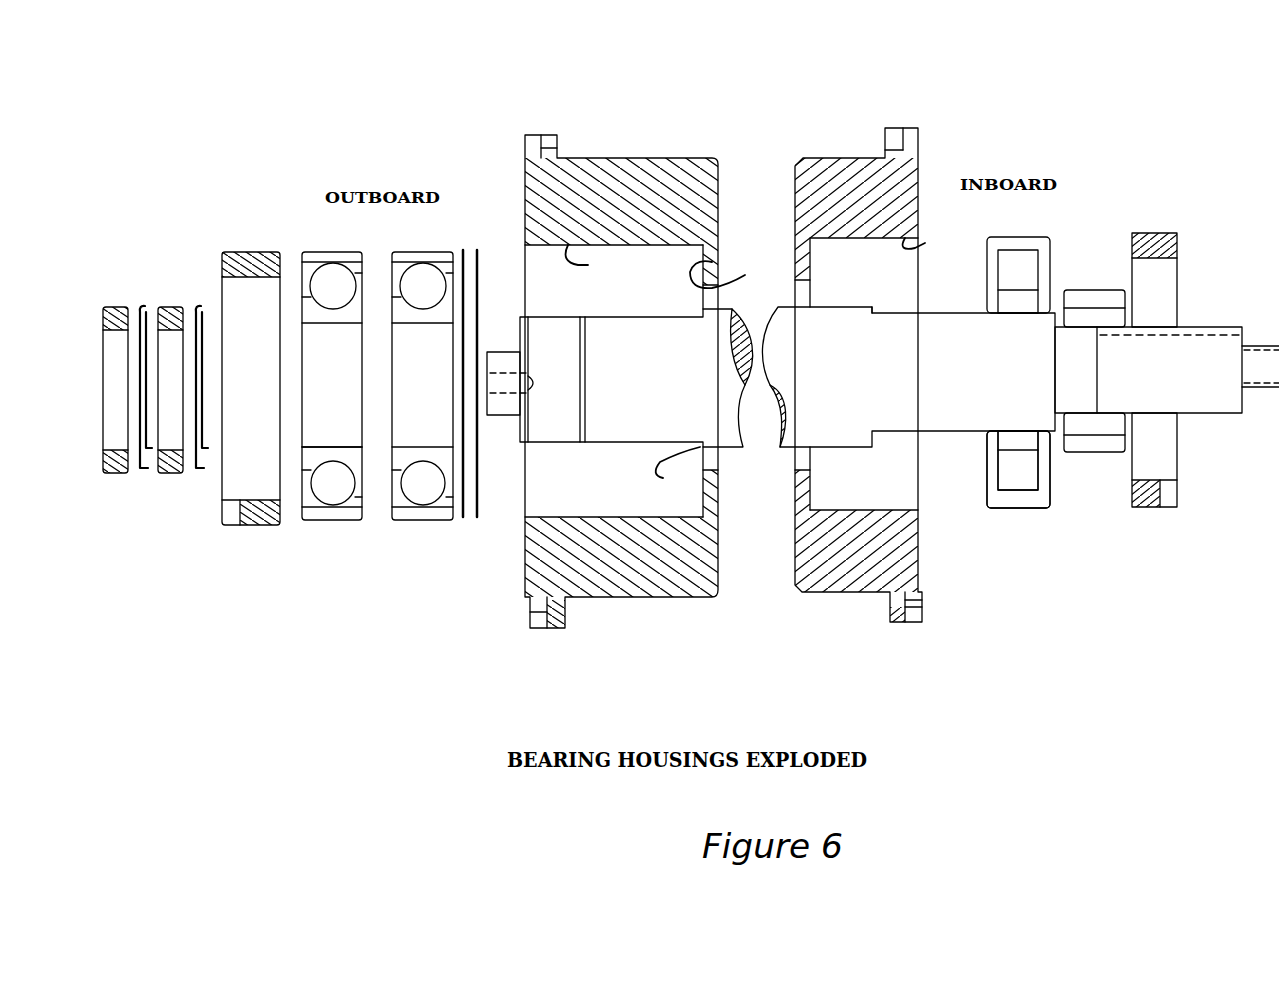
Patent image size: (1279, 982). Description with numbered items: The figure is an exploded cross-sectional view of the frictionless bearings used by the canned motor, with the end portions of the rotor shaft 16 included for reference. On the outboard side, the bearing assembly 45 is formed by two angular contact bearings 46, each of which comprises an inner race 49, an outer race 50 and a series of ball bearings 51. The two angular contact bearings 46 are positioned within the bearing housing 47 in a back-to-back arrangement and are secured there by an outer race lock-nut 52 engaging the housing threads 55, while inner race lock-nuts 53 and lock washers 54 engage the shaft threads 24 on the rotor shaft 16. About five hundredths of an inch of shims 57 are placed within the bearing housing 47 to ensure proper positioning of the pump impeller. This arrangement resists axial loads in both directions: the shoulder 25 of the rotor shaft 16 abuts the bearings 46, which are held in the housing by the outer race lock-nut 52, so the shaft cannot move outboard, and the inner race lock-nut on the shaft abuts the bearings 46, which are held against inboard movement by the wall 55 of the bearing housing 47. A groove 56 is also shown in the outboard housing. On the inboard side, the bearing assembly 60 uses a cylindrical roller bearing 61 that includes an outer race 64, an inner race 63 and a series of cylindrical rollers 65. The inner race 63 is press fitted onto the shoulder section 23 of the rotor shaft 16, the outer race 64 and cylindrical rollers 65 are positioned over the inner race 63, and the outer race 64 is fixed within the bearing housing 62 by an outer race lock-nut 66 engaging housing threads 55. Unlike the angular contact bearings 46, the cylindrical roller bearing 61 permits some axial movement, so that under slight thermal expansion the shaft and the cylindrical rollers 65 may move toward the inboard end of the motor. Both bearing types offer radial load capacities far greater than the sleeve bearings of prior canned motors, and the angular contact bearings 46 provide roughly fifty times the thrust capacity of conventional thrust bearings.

The rotor shaft 16 is at (658, 392).
The shoulder section 23 is at (830, 312).
The shaft threads 24 is at (553, 318).
The shoulder 25 is at (678, 471).
The bearing assembly 45 is at (250, 205).
The angular contact bearings 46 is at (383, 547).
The bearing housing 47 is at (620, 158).
The inner race 49 is at (323, 447).
The outer race 50 is at (320, 522).
The ball bearings 51 is at (423, 285).
The outer race lock-nut 52 is at (235, 255).
The inner race lock-nuts 53 is at (106, 306).
The lock washers 54 is at (141, 306).
The housing threads 55 is at (759, 246).
The seal groove 56 is at (732, 271).
The shims 57 is at (475, 253).
The bearing assembly 60 is at (1038, 118).
The cylindrical roller bearing 61 is at (1060, 228).
The bearing housing 62 is at (835, 158).
The inner race 63 is at (1090, 465).
The outer race 64 is at (995, 508).
The cylindrical rollers 65 is at (1018, 477).
The outer race lock-nut 66 is at (1165, 233).